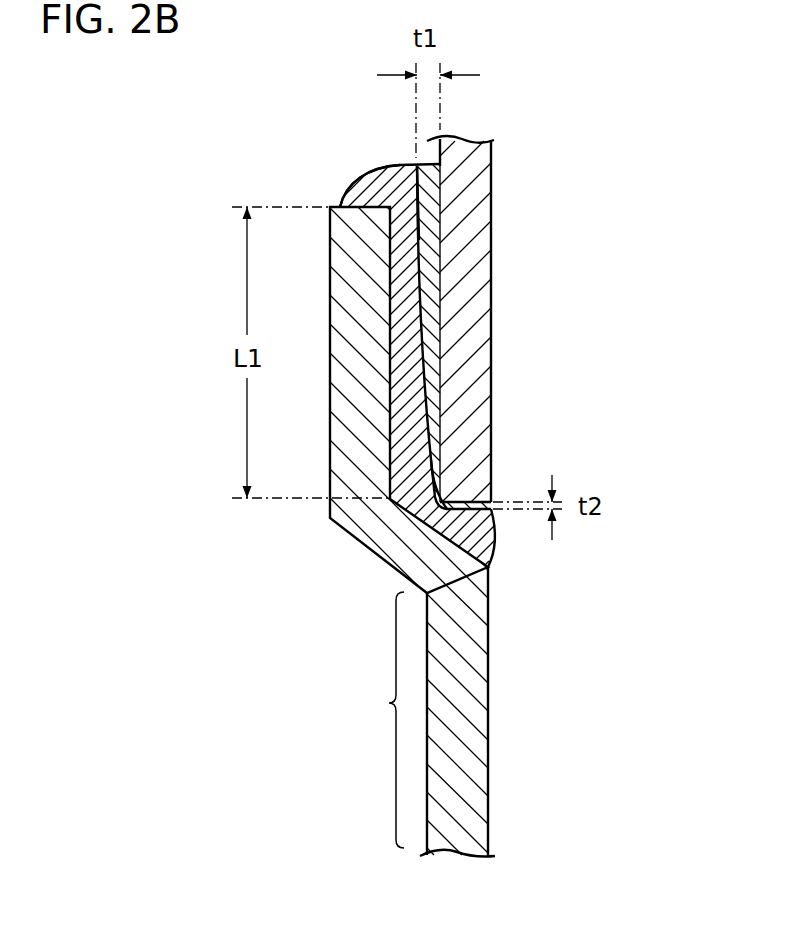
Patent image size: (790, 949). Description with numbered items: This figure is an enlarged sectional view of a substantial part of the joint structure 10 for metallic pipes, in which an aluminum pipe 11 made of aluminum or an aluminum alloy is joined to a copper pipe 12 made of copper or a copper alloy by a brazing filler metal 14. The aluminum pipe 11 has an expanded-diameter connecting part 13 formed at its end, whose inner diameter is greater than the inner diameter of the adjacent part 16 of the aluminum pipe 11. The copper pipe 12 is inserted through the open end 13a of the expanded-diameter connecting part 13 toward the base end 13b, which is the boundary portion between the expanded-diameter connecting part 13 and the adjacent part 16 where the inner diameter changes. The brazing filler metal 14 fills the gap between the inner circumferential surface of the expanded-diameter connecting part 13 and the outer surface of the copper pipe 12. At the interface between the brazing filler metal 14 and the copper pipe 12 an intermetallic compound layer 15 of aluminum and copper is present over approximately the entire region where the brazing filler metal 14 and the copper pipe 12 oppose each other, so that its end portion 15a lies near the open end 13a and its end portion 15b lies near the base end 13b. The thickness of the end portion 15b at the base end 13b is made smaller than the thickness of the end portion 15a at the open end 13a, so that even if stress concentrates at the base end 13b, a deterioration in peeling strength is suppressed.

The joint structure 10 is at (206, 186).
The aluminum pipe 11 is at (495, 702).
The copper pipe 12 is at (496, 184).
The expanded-diameter connecting part 13 is at (348, 256).
The open end 13a is at (365, 190).
The base end 13b is at (498, 562).
The brazing filler metal 14 is at (411, 410).
The intermetallic compound layer 15 is at (433, 301).
The end portion of the intermetallic compound layer 15a is at (425, 152).
The end portion of the intermetallic compound layer 15b is at (422, 562).
The adjacent part 16 is at (381, 720).